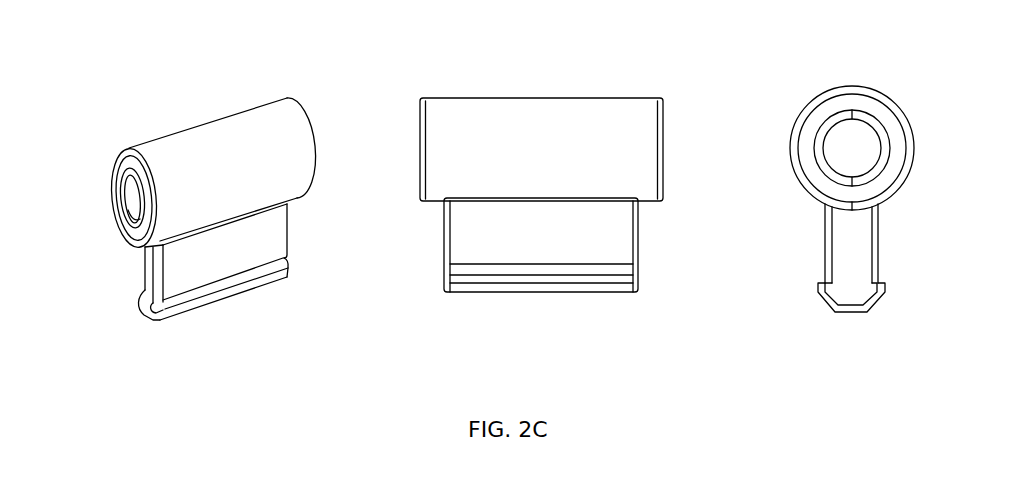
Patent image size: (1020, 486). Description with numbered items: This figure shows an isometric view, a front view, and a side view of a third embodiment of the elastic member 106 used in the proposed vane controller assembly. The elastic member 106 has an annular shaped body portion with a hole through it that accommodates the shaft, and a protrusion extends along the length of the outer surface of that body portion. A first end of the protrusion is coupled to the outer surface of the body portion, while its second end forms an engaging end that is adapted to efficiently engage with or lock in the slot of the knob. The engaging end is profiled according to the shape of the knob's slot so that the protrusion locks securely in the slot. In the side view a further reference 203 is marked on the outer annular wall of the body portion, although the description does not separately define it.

The elastic member 106 is at (168, 40).
The outer wall 203 is at (847, 93).